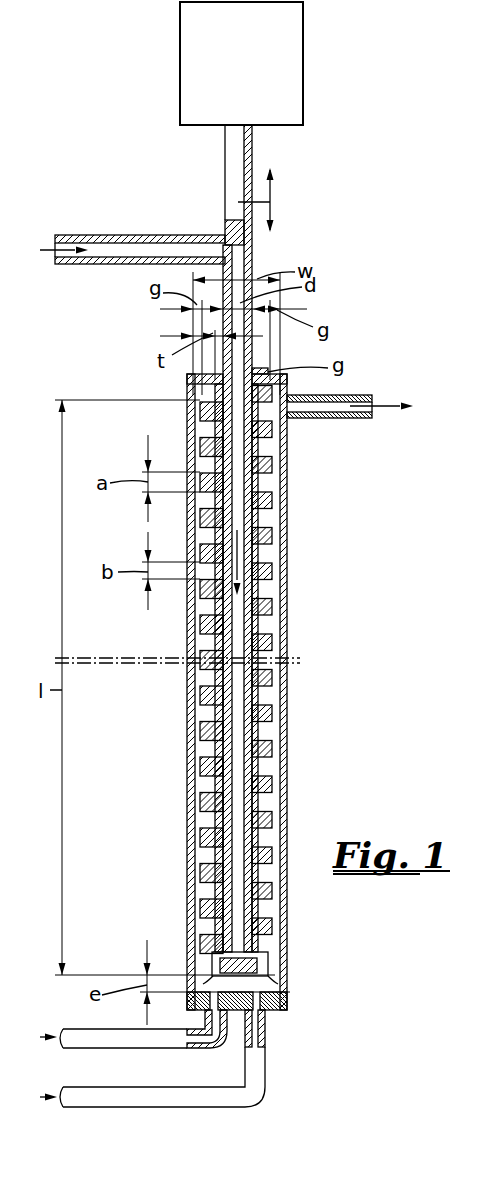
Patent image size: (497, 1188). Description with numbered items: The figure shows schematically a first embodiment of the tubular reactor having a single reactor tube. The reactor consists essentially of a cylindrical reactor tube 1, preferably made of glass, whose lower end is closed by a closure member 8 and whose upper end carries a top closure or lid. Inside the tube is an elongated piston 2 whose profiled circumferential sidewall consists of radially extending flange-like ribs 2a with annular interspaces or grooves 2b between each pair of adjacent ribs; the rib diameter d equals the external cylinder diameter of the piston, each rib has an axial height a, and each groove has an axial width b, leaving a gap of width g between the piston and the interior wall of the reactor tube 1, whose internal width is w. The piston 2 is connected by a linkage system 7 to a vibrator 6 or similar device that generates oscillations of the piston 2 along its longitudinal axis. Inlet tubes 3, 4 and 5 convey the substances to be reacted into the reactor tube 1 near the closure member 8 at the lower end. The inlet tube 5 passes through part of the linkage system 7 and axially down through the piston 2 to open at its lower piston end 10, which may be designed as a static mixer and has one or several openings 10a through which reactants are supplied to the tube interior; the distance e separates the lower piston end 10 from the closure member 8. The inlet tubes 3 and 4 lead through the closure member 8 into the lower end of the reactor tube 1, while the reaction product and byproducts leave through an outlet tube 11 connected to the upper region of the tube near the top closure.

The reactor tube 1 is at (285, 755).
The piston 2 is at (279, 669).
The flange-like ribs 2a is at (268, 517).
The annular interspaces 2b is at (268, 568).
The inlet tube 3 is at (72, 1032).
The inlet tube 4 is at (105, 1097).
The inlet tube 5 is at (185, 252).
The vibrator 6 is at (291, 68).
The linkage system 7 is at (243, 150).
The closure member 8 is at (287, 1003).
The lower piston end 10 is at (270, 962).
The openings 10a is at (270, 975).
The outlet tube 11 is at (337, 406).